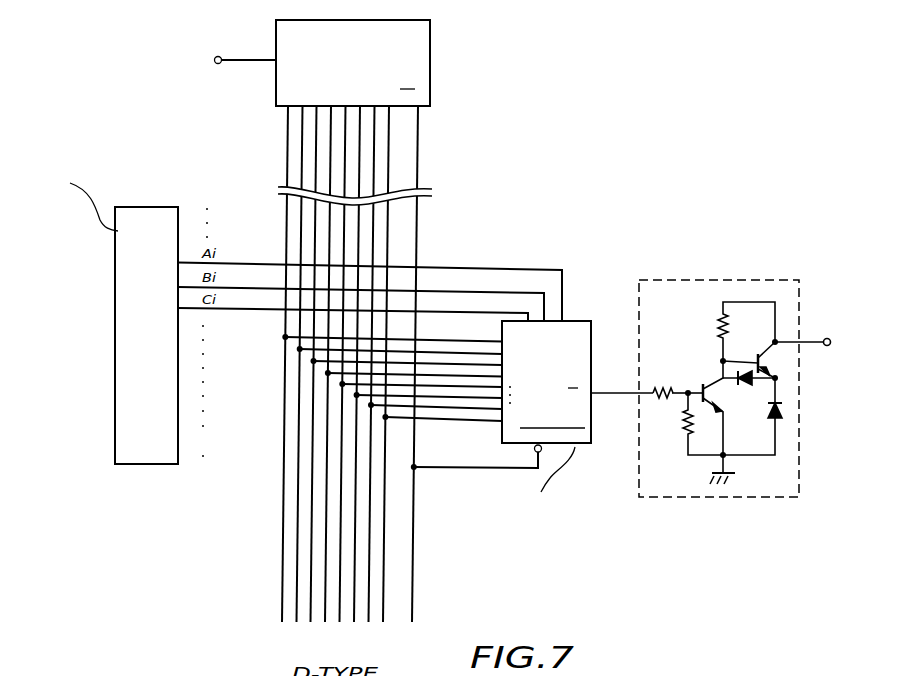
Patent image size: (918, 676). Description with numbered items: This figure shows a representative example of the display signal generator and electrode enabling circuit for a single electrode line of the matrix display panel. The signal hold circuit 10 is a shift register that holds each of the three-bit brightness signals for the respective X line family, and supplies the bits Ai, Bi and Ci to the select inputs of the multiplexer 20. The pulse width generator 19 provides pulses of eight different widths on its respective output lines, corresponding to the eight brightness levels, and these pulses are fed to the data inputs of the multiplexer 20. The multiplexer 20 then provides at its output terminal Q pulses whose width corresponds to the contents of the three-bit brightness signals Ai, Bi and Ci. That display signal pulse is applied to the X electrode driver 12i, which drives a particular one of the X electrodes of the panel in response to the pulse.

The pulse width generator 19 is at (430, 52).
The signal hold circuit 10 is at (160, 343).
The multiplexer 20 is at (587, 447).
The X electrode driver 12i is at (695, 485).